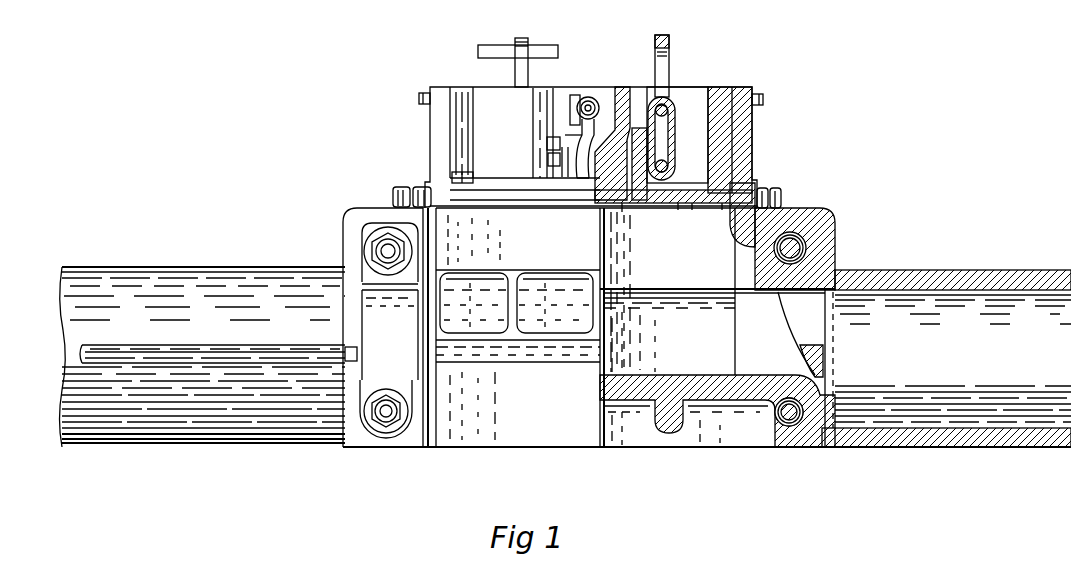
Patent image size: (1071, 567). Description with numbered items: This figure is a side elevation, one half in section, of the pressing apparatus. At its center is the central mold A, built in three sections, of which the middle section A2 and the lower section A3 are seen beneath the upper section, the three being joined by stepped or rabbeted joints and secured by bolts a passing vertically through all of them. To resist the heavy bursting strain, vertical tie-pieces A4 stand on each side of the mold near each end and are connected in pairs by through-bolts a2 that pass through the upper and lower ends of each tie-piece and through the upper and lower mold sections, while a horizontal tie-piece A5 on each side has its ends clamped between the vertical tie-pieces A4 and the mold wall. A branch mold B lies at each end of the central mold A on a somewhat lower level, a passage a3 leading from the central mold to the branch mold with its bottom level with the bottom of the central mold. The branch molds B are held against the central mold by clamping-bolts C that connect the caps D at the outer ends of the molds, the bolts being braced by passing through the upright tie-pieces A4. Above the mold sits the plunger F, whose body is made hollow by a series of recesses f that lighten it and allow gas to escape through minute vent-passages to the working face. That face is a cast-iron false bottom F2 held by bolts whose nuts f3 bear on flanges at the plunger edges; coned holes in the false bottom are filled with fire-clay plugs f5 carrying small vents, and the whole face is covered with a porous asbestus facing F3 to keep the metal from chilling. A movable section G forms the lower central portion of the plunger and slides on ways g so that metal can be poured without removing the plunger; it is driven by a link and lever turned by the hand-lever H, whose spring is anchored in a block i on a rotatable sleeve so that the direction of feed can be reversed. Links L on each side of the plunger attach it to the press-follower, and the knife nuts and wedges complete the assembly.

The branch mold B is at (62, 394).
The clamping-bolt C is at (82, 355).
The cap D is at (946, 358).
The central mold A is at (698, 279).
The middle section A2 is at (669, 335).
The lower section A3 is at (518, 390).
The vertical tie-piece A4 is at (389, 327).
The horizontal tie-piece A5 is at (516, 303).
The bolt a is at (405, 188).
The through-bolt a2 is at (388, 250).
The passage a3 is at (803, 337).
The housing K is at (432, 135).
The link L is at (524, 40).
The plunger F is at (588, 97).
The hand-lever H is at (600, 105).
The movable section G is at (547, 143).
The way g is at (548, 160).
The block i is at (669, 168).
The recess f is at (695, 102).
The nut f3 is at (455, 178).
The plug f5 is at (692, 208).
The false bottom F2 is at (722, 208).
The facing F3 is at (678, 208).